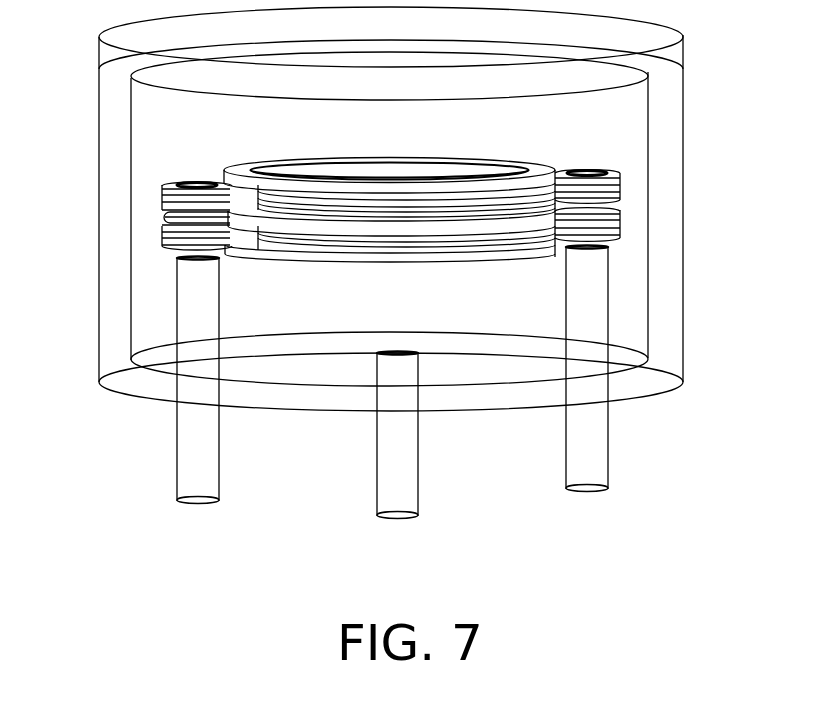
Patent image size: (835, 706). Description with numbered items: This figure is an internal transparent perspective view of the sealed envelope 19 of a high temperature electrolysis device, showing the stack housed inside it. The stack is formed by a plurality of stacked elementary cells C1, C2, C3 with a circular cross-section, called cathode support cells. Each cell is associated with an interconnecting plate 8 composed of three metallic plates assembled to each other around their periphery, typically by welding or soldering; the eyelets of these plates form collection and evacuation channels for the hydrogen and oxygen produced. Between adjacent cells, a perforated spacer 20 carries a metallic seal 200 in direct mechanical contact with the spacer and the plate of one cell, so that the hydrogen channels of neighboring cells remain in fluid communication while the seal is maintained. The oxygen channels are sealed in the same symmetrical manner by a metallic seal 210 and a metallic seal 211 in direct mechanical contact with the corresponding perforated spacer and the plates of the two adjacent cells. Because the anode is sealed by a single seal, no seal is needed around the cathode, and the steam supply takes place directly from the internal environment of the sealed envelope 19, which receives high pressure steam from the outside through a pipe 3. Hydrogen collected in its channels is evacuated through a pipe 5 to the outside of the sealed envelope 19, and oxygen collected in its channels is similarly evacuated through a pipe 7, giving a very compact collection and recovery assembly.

The sealed envelope 19 is at (668, 273).
The perforated spacer 20 is at (617, 207).
The elementary cell C1 is at (545, 166).
The elementary cell C2 is at (482, 222).
The elementary cell C3 is at (435, 260).
The metallic seal 211 is at (163, 184).
The metallic seal 200 is at (163, 213).
The metallic seal 210 is at (163, 243).
The interconnecting plate 8 is at (622, 172).
The pipe 7 is at (188, 478).
The pipe 3 is at (377, 487).
The pipe 5 is at (607, 452).